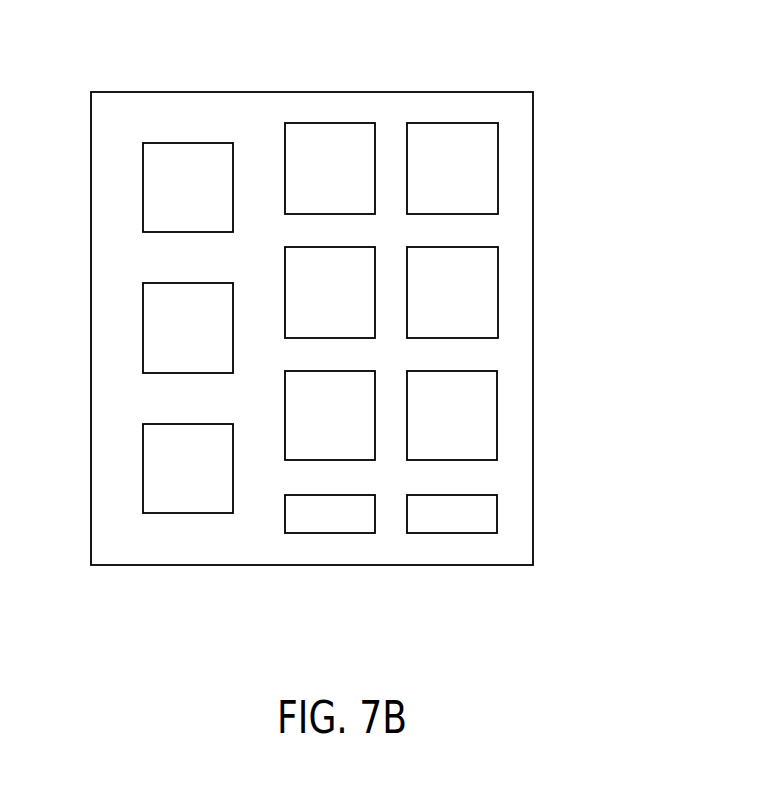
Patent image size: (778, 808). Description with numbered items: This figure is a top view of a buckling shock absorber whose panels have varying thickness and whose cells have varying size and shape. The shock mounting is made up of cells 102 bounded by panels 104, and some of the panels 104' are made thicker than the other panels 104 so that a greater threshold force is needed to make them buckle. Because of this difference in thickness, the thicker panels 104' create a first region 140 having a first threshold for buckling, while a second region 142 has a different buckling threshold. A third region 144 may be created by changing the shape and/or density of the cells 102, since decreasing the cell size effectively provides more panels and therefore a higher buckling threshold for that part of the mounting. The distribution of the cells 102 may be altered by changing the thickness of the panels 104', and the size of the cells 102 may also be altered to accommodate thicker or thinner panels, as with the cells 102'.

The first region 140 is at (128, 75).
The cells 102 is at (362, 365).
The cells 102' is at (452, 551).
The panels 104 is at (445, 578).
The panels 104' is at (153, 531).
The second region 142 is at (573, 203).
The third region 144 is at (490, 623).